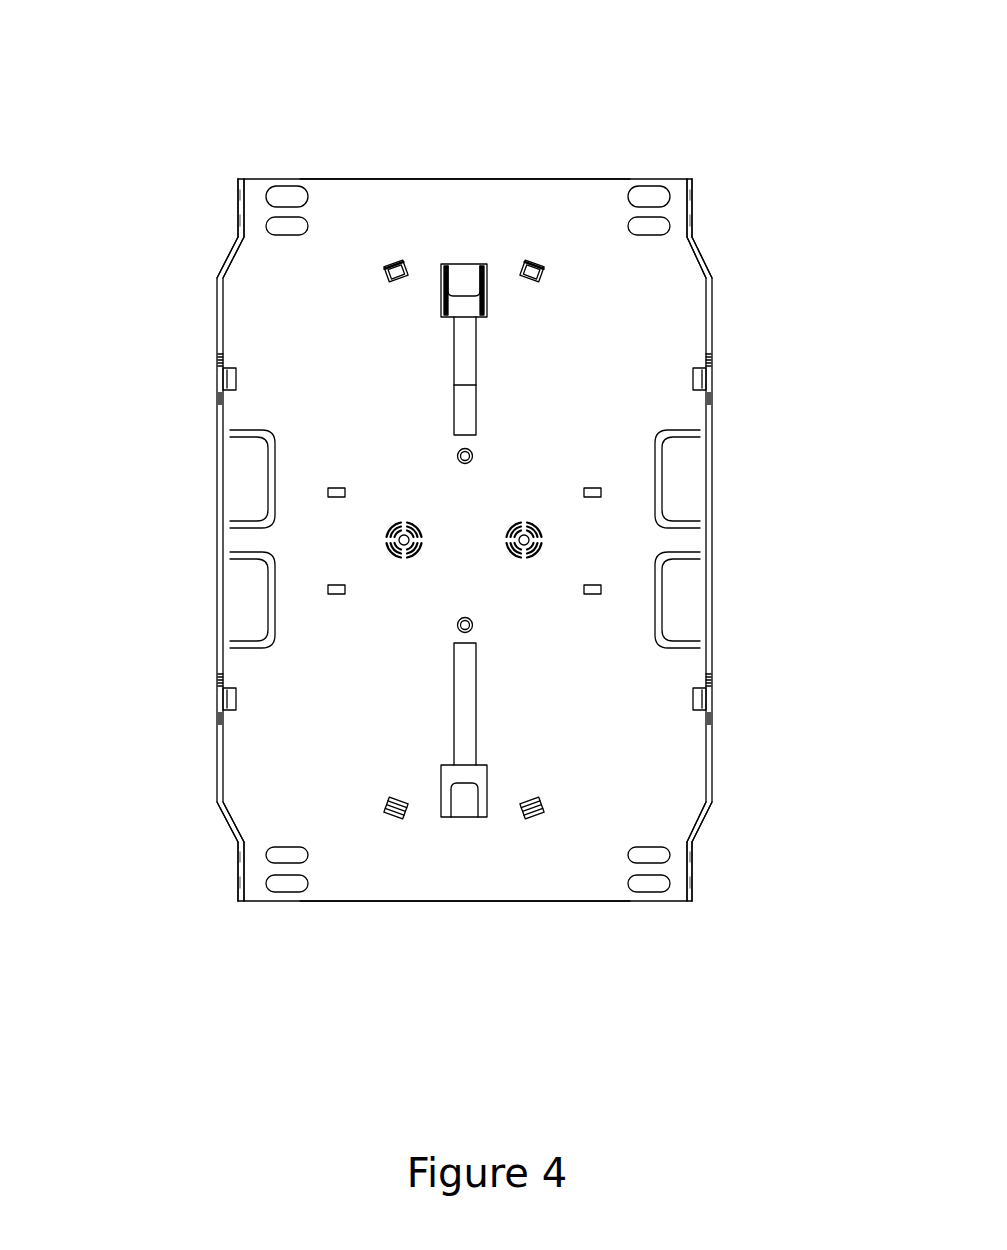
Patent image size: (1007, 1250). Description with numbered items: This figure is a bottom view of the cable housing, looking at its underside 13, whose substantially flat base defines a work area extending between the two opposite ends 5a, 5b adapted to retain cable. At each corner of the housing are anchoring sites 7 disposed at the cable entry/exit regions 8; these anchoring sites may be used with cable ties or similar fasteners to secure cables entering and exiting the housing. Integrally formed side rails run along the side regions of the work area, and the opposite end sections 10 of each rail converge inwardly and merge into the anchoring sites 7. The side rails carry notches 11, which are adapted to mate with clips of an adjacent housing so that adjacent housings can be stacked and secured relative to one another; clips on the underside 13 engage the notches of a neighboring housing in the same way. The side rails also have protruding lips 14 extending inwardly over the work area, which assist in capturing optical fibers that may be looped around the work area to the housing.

The end 5a is at (433, 178).
The end 5b is at (490, 901).
The anchoring site 7 is at (238, 206).
The cable entry/exit region 8 is at (287, 165).
The end section 10 is at (228, 257).
The notch 11 is at (228, 380).
The underside 13 is at (612, 751).
The protruding lip 14 is at (245, 607).